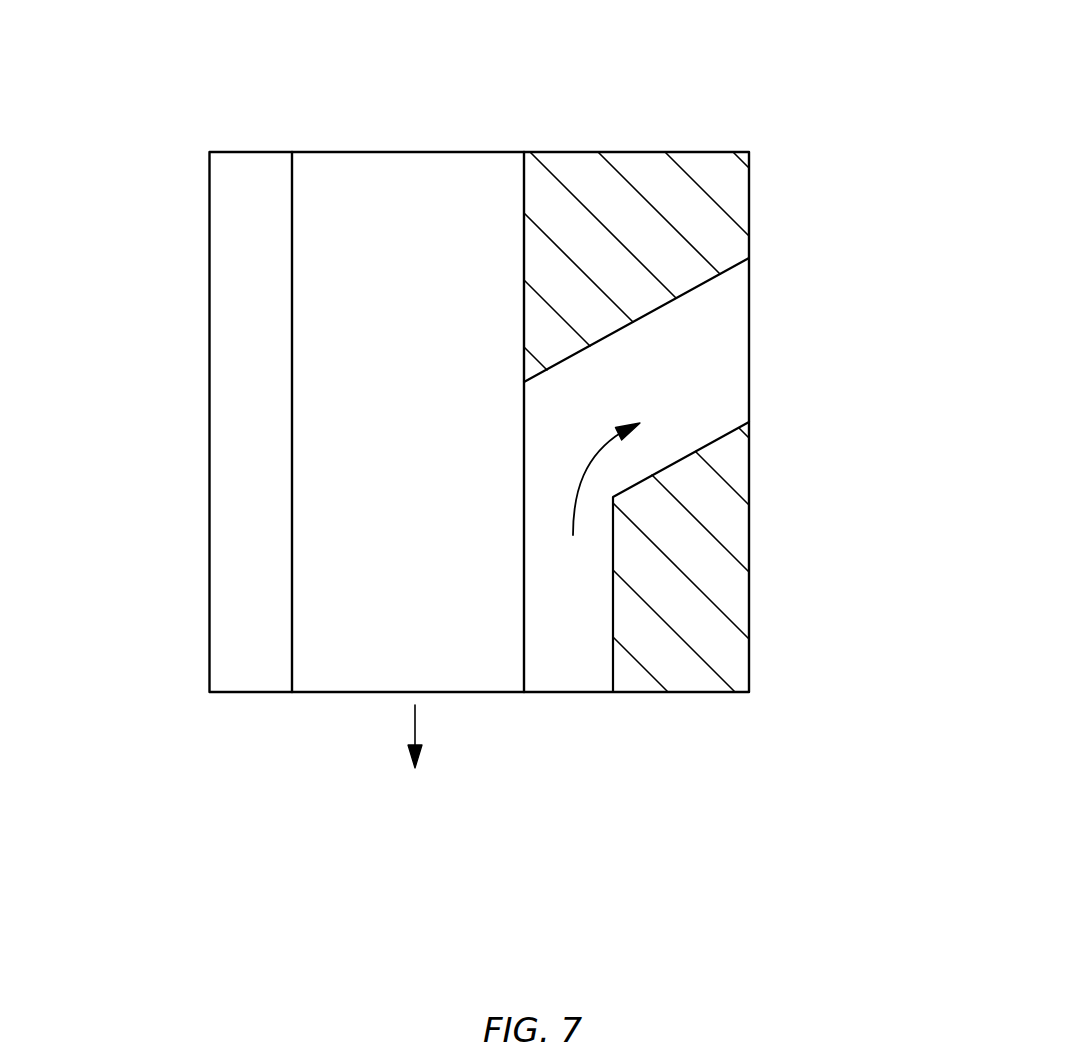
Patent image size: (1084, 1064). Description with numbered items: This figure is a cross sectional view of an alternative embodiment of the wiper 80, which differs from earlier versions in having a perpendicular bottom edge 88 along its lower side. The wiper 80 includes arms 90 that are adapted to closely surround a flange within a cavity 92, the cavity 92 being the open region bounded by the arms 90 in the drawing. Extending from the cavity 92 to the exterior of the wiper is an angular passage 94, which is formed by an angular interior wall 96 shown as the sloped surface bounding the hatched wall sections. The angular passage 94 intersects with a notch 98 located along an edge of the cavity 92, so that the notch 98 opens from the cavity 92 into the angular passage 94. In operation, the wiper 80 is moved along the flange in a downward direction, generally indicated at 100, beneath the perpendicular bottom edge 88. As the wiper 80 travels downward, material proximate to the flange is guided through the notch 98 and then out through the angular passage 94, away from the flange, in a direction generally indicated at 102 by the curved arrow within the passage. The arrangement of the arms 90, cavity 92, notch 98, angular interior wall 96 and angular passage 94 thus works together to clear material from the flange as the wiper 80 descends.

The wiper 80 is at (561, 100).
The perpendicular bottom edge 88 is at (705, 692).
The arms 90 is at (248, 175).
The cavity 92 is at (432, 162).
The angular passage 94 is at (695, 385).
The angular interior wall 96 is at (691, 293).
The notch 98 is at (581, 623).
The downward direction 100 is at (413, 733).
The direction of material flow 102 is at (595, 462).